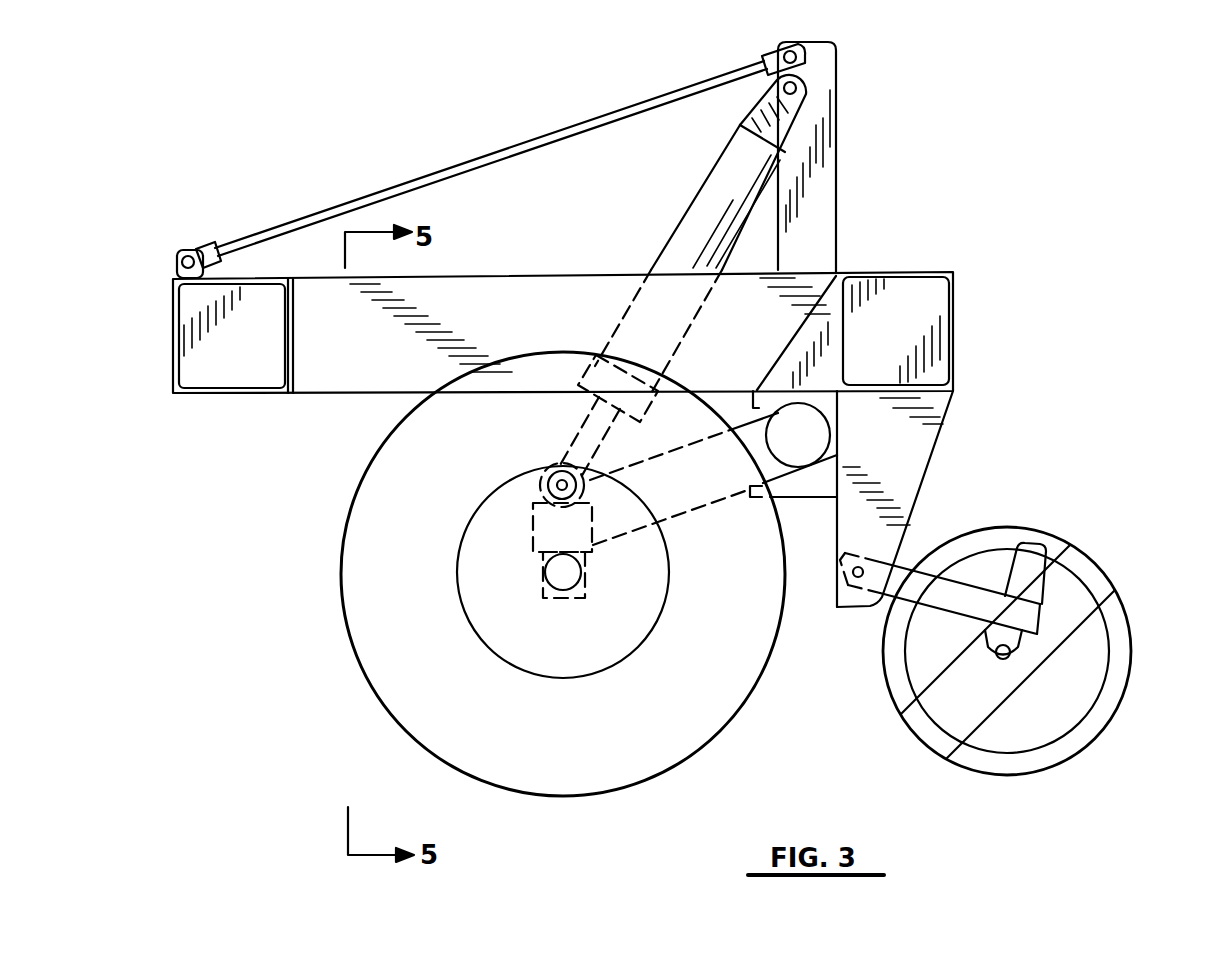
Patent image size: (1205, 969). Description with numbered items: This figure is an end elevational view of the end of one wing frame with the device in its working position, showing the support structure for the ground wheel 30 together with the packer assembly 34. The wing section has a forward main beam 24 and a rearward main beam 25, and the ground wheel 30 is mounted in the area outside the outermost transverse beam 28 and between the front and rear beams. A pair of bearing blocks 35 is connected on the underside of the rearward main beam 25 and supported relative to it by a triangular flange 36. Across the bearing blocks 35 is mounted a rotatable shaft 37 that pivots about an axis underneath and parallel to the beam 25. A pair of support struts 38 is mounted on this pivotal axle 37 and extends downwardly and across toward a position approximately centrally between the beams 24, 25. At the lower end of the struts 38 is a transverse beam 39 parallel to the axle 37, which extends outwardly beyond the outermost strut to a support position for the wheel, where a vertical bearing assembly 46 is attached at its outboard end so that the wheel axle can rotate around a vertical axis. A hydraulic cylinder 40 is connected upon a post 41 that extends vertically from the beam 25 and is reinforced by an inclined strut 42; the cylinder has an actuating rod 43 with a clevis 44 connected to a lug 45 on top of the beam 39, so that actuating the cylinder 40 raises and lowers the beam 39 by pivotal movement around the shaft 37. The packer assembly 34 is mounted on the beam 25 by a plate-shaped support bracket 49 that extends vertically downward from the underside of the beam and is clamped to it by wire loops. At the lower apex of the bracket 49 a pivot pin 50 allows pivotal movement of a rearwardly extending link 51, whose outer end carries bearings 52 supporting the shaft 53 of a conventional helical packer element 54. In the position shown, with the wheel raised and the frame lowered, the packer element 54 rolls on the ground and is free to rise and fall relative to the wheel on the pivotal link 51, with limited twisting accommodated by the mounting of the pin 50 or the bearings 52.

The forward main beam 24 is at (190, 330).
The rearward main beam 25 is at (905, 287).
The outermost transverse beam 28 is at (535, 307).
The ground wheel 30 is at (370, 650).
The packer assembly 34 is at (992, 631).
The bearing blocks 35 is at (747, 404).
The triangular flange 36 is at (804, 326).
The rotatable shaft 37 is at (806, 437).
The support struts 38 is at (708, 488).
The transverse beam 39 is at (542, 531).
The hydraulic cylinder 40 is at (681, 219).
The post 41 is at (822, 78).
The inclined strut 42 is at (484, 160).
The actuating rod 43 is at (590, 418).
The clevis 44 is at (548, 461).
The lug 45 is at (541, 493).
The vertical bearing assembly 46 is at (562, 595).
The support bracket 49 is at (902, 478).
The pivot pin 50 is at (858, 580).
The link 51 is at (960, 609).
The bearings 52 is at (995, 656).
The shaft 53 is at (1018, 656).
The helical packer element 54 is at (1062, 743).